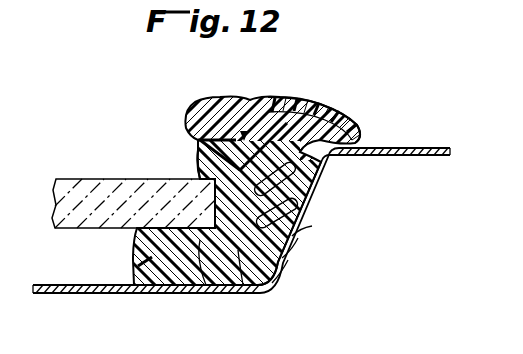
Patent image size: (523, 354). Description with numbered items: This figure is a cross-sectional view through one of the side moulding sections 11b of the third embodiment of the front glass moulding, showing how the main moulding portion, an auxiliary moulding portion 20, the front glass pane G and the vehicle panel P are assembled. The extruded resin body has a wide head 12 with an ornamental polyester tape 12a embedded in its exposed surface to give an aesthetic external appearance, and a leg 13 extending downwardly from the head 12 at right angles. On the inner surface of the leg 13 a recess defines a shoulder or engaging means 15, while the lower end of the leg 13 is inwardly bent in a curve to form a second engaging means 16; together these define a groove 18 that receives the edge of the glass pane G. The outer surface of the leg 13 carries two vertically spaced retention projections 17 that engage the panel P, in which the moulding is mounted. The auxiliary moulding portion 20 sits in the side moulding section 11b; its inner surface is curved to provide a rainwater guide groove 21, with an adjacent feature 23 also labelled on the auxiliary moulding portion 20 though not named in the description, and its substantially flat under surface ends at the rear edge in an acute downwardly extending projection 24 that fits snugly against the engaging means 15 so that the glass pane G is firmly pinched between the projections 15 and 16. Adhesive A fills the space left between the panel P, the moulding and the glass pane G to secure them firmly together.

The head 12 is at (203, 108).
The ornamental polyester tape 12a is at (293, 107).
The side moulding section 11b is at (323, 104).
The auxiliary moulding portion 20 is at (243, 133).
The rainwater guide groove 21 is at (196, 150).
The groove 23 is at (199, 173).
The retention projection 17 is at (312, 172).
The acute downwardly extending projection 24 is at (298, 214).
The leg 13 is at (294, 248).
The engaging means 15 is at (288, 254).
The second engaging means 16 is at (210, 287).
The groove 18 is at (242, 287).
The front glass pane G is at (110, 178).
The panel P is at (404, 148).
The adhesive A is at (140, 287).